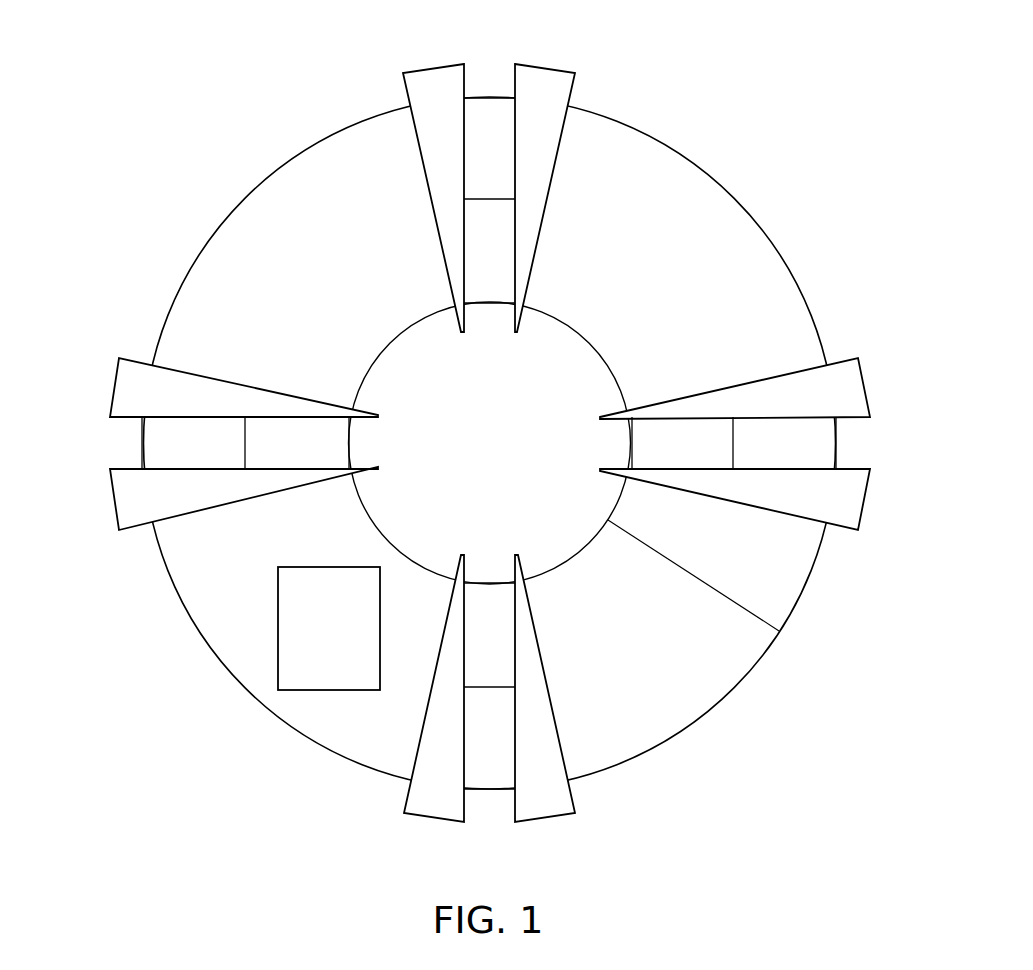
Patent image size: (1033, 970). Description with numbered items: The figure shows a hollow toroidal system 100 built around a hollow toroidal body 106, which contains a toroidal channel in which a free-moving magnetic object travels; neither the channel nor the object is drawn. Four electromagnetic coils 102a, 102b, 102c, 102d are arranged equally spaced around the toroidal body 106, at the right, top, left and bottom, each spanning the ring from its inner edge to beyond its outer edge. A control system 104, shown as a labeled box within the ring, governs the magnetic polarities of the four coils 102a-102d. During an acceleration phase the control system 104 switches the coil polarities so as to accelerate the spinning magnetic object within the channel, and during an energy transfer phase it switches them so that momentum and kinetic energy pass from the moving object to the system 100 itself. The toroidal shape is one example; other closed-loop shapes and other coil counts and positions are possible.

The hollow toroidal system 100 is at (735, 197).
The electromagnetic coil 102a is at (858, 497).
The electromagnetic coil 102b is at (545, 75).
The electromagnetic coil 102c is at (120, 387).
The electromagnetic coil 102d is at (545, 808).
The control system 104 is at (351, 674).
The hollow toroidal body 106 is at (707, 702).